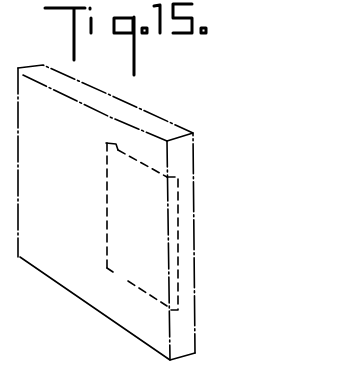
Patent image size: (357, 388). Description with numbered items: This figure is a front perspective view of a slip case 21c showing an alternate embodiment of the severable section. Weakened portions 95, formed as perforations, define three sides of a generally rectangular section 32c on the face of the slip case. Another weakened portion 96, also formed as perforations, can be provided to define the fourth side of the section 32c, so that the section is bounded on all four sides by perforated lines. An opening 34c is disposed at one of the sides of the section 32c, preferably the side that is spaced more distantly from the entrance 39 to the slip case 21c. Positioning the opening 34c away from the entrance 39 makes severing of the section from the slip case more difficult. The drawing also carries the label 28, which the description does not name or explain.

The slip case 21c is at (197, 104).
The side face 28 is at (186, 151).
The generally rectangular section 32c is at (176, 216).
The weakened portion 96 is at (183, 252).
The entrance 39 is at (208, 327).
The opening 34c is at (112, 216).
The weakened portions 95 is at (124, 157).